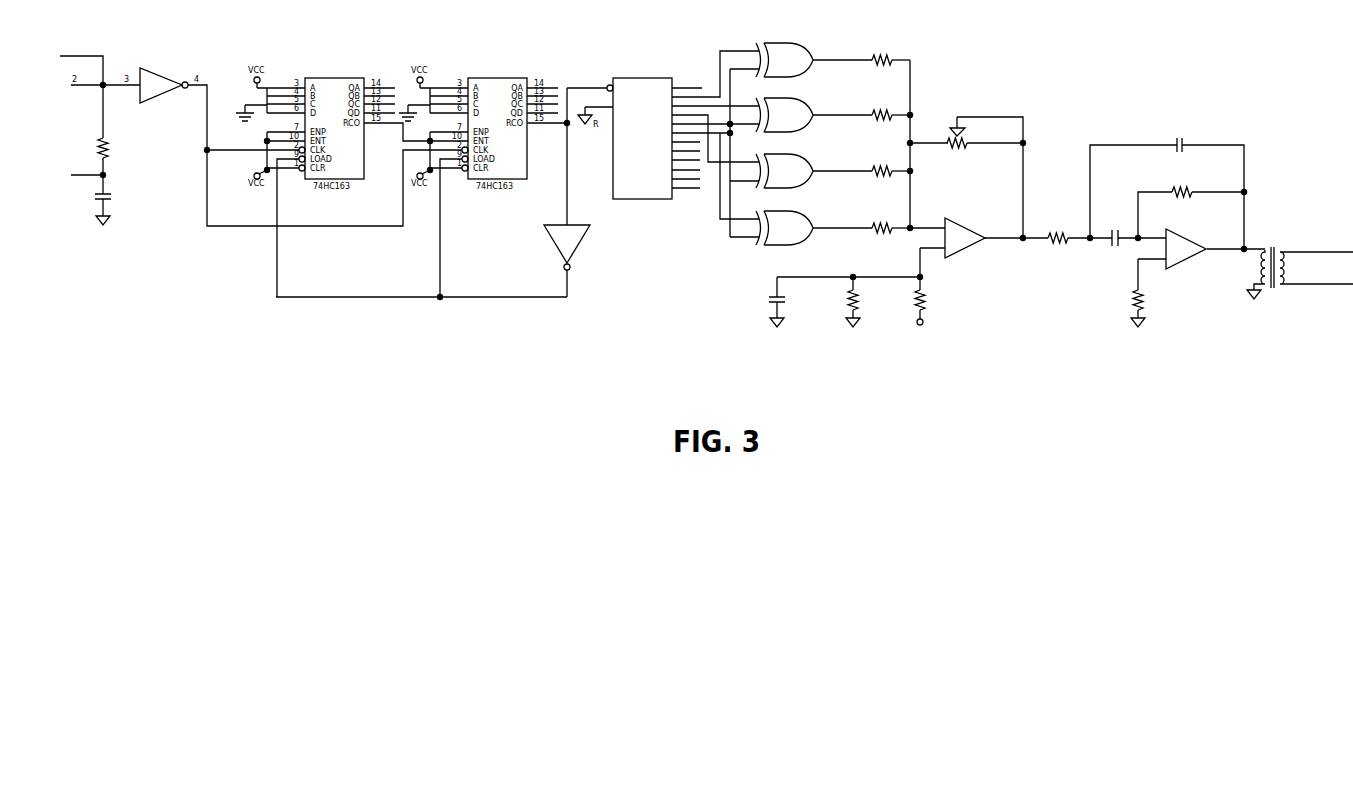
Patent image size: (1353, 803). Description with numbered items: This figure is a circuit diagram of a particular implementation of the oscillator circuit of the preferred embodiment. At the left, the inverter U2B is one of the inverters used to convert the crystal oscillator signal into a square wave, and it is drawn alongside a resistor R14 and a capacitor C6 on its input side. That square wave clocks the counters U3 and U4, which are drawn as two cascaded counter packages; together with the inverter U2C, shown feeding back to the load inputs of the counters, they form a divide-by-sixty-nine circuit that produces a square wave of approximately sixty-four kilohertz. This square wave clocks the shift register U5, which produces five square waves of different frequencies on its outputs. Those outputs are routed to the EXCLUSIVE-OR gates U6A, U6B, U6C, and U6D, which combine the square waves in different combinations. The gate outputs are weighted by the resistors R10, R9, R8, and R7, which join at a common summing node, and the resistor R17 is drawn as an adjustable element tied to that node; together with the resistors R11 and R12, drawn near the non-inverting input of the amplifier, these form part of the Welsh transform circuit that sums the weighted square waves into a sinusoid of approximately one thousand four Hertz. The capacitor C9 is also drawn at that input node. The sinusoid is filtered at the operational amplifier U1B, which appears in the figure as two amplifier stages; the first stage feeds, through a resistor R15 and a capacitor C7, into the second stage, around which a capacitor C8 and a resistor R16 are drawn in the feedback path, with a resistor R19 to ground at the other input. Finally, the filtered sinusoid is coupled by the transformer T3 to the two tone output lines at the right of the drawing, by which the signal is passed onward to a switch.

The inverter U2B is at (164, 87).
The resistor 1K R14 is at (115, 130).
The capacitor 33PF C6 is at (116, 203).
The counter U3 is at (315, 181).
The counter U4 is at (478, 181).
The inverter U2C is at (585, 255).
The shift register U5 is at (674, 144).
The EXCLUSIVE-OR gate U6A is at (805, 60).
The EXCLUSIVE-OR gate U6B is at (805, 115).
The EXCLUSIVE-OR gate U6C is at (805, 171).
The EXCLUSIVE-OR gate U6D is at (804, 228).
The resistor R10 is at (889, 62).
The resistor R9 is at (890, 117).
The resistor R8 is at (890, 173).
The resistor R7 is at (890, 230).
The resistor R17 is at (968, 179).
The operational amplifier U1B is at (1098, 245).
The resistor 1K R15 is at (1080, 238).
The capacitor 0.027UF C7 is at (1119, 239).
The capacitor 0.027UF C8 is at (1168, 189).
The resistor 36K R16 is at (1191, 206).
The resistor 1.6K R19 is at (1151, 295).
The transformer T3 is at (1300, 273).
The capacitor 1000PT C9 is at (797, 305).
The resistor R11 is at (866, 305).
The resistor R12 is at (931, 307).